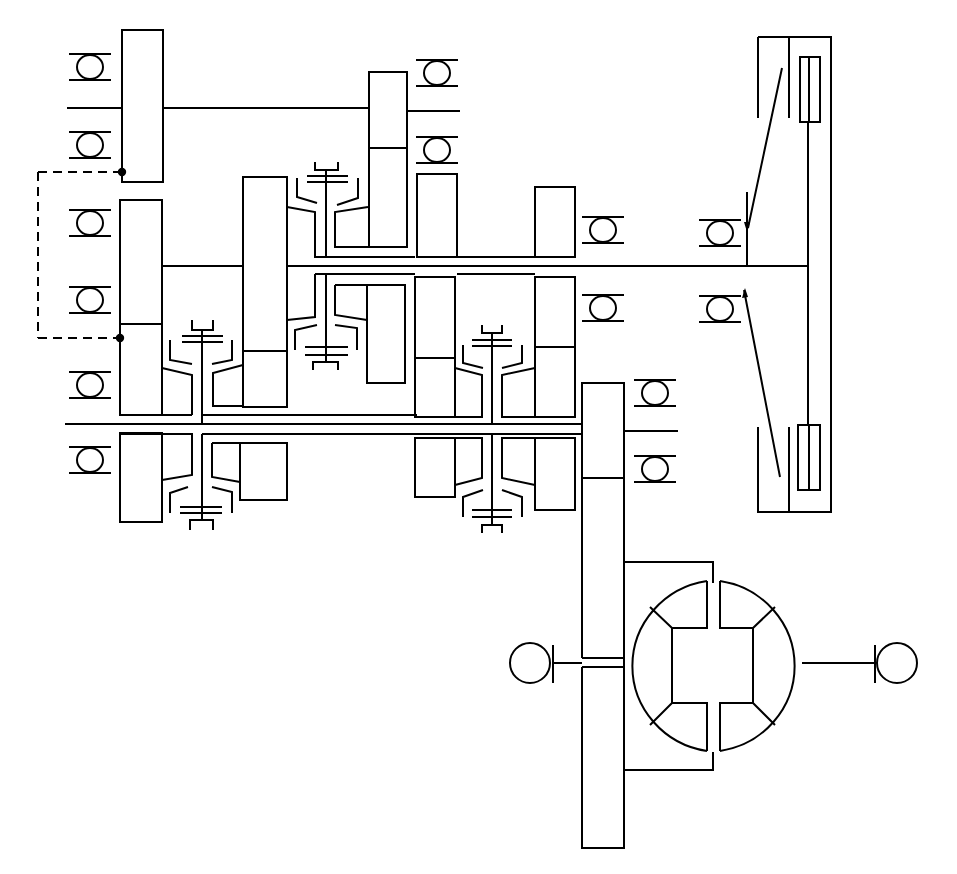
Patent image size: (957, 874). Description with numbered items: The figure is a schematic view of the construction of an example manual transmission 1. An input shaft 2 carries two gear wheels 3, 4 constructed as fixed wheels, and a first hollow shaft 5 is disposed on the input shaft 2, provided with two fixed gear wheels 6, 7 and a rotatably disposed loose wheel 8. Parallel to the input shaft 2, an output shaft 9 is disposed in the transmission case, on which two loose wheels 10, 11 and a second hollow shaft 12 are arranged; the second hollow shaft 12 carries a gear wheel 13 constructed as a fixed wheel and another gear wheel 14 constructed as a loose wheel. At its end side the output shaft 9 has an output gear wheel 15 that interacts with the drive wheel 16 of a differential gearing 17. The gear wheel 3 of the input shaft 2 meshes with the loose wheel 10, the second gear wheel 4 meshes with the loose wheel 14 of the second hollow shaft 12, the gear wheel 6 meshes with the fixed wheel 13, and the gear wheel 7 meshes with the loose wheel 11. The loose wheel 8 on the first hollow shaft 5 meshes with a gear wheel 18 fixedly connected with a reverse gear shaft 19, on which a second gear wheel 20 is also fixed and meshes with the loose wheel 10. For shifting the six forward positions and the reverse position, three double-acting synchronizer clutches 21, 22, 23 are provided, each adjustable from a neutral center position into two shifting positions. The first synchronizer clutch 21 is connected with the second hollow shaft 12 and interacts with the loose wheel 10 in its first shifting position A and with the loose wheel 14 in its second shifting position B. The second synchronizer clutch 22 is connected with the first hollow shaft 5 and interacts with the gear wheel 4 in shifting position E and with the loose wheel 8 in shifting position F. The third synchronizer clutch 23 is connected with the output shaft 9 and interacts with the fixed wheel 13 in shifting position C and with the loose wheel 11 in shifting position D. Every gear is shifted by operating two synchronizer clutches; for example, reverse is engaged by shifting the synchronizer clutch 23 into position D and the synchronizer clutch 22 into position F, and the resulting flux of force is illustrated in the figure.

The manual transmission 1 is at (577, 65).
The input shaft 2 is at (660, 268).
The gear wheel 3 is at (152, 240).
The gear wheel 4 is at (253, 200).
The first hollow shaft 5 is at (470, 253).
The gear wheel 6 is at (448, 211).
The gear wheel 7 is at (557, 197).
The loose wheel 8 is at (368, 373).
The output shaft 9 is at (78, 424).
The loose wheel 10 is at (125, 498).
The loose wheel 11 is at (557, 497).
The second hollow shaft 12 is at (333, 436).
The gear wheel 13 is at (420, 473).
The gear wheel 14 is at (272, 487).
The output gear wheel 15 is at (601, 402).
The drive wheel 16 is at (592, 750).
The differential gearing 17 is at (805, 724).
The gear wheel 18 is at (386, 83).
The reverse gear shaft 19 is at (235, 107).
The second gear wheel 20 is at (157, 55).
The first synchronizer clutch 21 is at (200, 532).
The second synchronizer clutch 22 is at (326, 138).
The third synchronizer clutch 23 is at (492, 546).
The first shifting position A is at (192, 360).
The second shifting position B is at (227, 351).
The first shifting position C is at (483, 361).
The second shifting position D is at (518, 358).
The first shifting position E is at (351, 196).
The second shifting position F is at (351, 191).